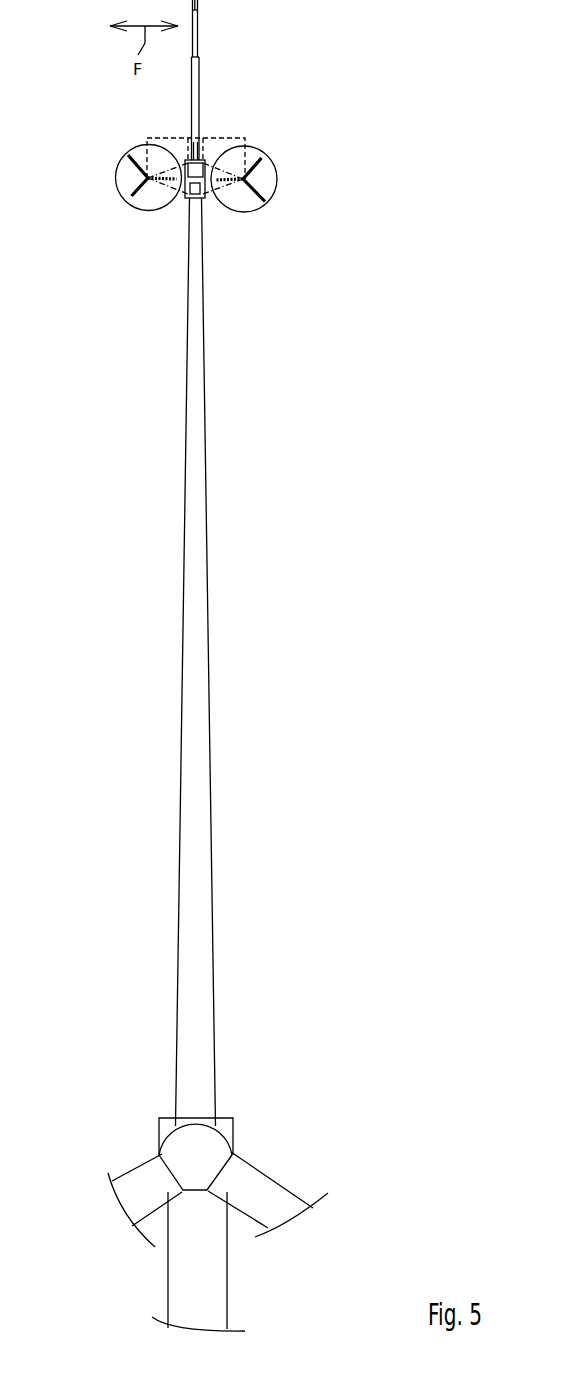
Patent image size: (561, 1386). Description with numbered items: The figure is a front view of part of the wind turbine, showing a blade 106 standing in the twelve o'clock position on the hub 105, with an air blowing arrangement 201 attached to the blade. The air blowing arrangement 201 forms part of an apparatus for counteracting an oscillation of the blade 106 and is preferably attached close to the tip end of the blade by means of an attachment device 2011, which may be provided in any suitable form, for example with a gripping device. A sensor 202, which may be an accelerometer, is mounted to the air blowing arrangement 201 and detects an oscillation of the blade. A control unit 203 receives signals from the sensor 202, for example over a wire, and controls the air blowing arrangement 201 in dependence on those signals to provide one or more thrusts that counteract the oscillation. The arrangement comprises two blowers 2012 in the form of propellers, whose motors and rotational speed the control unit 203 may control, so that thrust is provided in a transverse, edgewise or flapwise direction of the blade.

The air blowing arrangement 201 is at (117, 255).
The control unit 203 is at (196, 139).
The sensor 202 is at (192, 202).
The attachment device 2011 is at (203, 202).
The blowers 2012 is at (120, 191).
The blade 106 is at (186, 497).
The hub 105 is at (167, 1131).